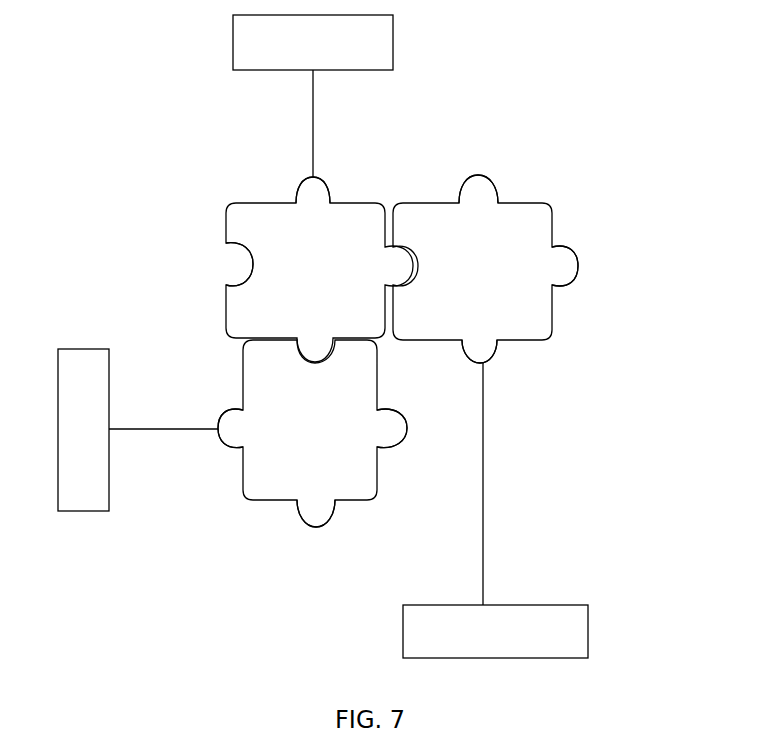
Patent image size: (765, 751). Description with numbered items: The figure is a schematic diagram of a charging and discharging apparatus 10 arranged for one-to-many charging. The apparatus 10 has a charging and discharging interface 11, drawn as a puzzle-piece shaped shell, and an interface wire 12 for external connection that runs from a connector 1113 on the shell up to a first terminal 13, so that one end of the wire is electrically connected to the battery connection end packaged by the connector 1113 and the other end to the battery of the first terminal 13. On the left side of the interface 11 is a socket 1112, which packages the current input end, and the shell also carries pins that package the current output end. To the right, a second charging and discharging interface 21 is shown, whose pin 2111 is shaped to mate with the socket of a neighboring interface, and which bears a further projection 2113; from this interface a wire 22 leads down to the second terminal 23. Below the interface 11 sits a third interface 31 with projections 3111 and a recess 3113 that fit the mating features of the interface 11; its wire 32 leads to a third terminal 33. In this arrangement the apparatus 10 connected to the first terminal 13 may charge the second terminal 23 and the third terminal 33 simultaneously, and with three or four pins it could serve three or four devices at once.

The charging and discharging apparatus 10 is at (207, 178).
The charging and discharging interface 11 is at (250, 298).
The interface wire for external connection 12 is at (312, 165).
The first terminal 13 is at (340, 70).
The socket 1112 is at (253, 266).
The connector 1113 is at (327, 185).
The charging and discharging interface 21 is at (533, 237).
The pin 2111 is at (493, 183).
The protrusion of second body 2113 is at (493, 352).
The second connecting line 22 is at (483, 422).
The second terminal 23 is at (526, 603).
The third body 31 is at (263, 478).
The protrusion of third body 3111 is at (316, 525).
The recess of third body 3113 is at (233, 445).
The third connecting line 32 is at (187, 430).
The third terminal 33 is at (89, 349).